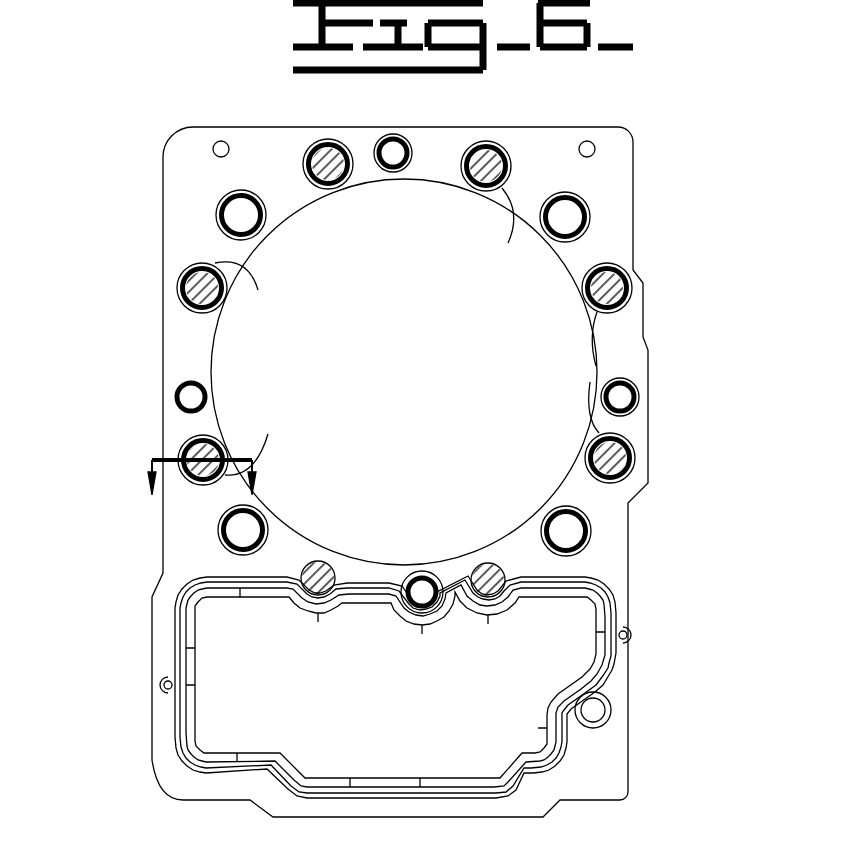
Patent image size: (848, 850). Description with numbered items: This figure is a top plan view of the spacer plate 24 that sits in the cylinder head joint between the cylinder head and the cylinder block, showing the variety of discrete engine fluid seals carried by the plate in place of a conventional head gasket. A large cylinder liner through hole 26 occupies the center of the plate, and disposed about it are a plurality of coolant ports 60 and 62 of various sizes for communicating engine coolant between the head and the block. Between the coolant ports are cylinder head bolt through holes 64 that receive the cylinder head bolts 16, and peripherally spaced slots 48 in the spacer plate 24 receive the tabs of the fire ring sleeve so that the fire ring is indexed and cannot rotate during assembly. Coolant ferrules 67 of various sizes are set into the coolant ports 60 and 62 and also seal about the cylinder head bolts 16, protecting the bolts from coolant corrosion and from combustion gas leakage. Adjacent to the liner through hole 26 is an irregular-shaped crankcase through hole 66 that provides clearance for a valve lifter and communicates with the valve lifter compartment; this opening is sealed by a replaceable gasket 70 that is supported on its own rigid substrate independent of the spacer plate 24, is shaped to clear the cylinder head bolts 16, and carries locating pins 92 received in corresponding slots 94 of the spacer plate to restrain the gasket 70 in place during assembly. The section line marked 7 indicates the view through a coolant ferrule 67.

The section line 7- 7 is at (197, 466).
The cylinder head bolts 16 is at (335, 186).
The spacer plate 24 is at (645, 290).
The cylinder liner through hole 26 is at (422, 318).
The slots 48 is at (620, 270).
The coolant ports 60 is at (262, 225).
The coolant ports 62 is at (398, 170).
The cylinder head bolt through holes 64 is at (512, 228).
The crankcase through hole 66 is at (370, 681).
The coolant ferrules 67 is at (318, 143).
The gasket 70 is at (430, 612).
The locating pins 92 is at (165, 690).
The slots 94 is at (165, 680).